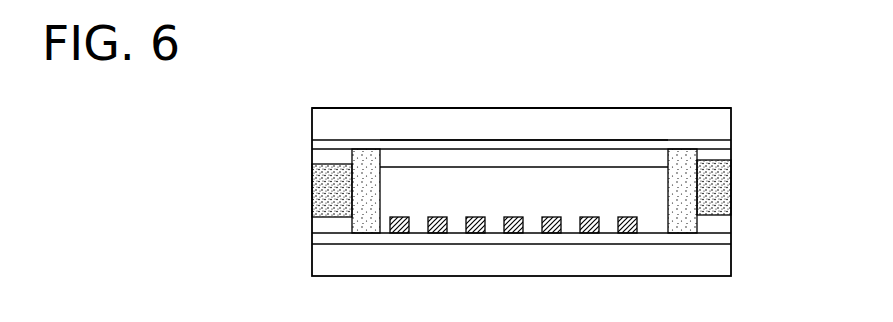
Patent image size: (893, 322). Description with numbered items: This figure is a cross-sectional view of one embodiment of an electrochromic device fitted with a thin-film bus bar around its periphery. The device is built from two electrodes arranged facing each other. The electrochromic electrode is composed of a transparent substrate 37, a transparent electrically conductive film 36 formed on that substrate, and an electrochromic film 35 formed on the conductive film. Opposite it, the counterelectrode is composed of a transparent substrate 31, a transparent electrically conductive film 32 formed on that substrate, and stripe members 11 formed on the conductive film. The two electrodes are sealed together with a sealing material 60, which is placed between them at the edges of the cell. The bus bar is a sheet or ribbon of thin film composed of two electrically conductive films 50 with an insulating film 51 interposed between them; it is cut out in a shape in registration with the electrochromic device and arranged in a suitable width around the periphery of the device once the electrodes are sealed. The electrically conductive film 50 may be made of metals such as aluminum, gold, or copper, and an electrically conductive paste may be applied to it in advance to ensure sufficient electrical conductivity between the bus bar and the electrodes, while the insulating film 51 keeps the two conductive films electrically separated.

The stripe members 11 is at (398, 216).
The transparent substrate 31 is at (520, 260).
The transparent electrically conductive film 32 is at (418, 235).
The electrochromic film 35 is at (468, 160).
The transparent electrically conductive film 36 is at (543, 141).
The transparent substrate 37 is at (635, 126).
The electrically conductive film 50 is at (730, 155).
The insulating film 51 is at (732, 198).
The sealing material 60 is at (363, 162).